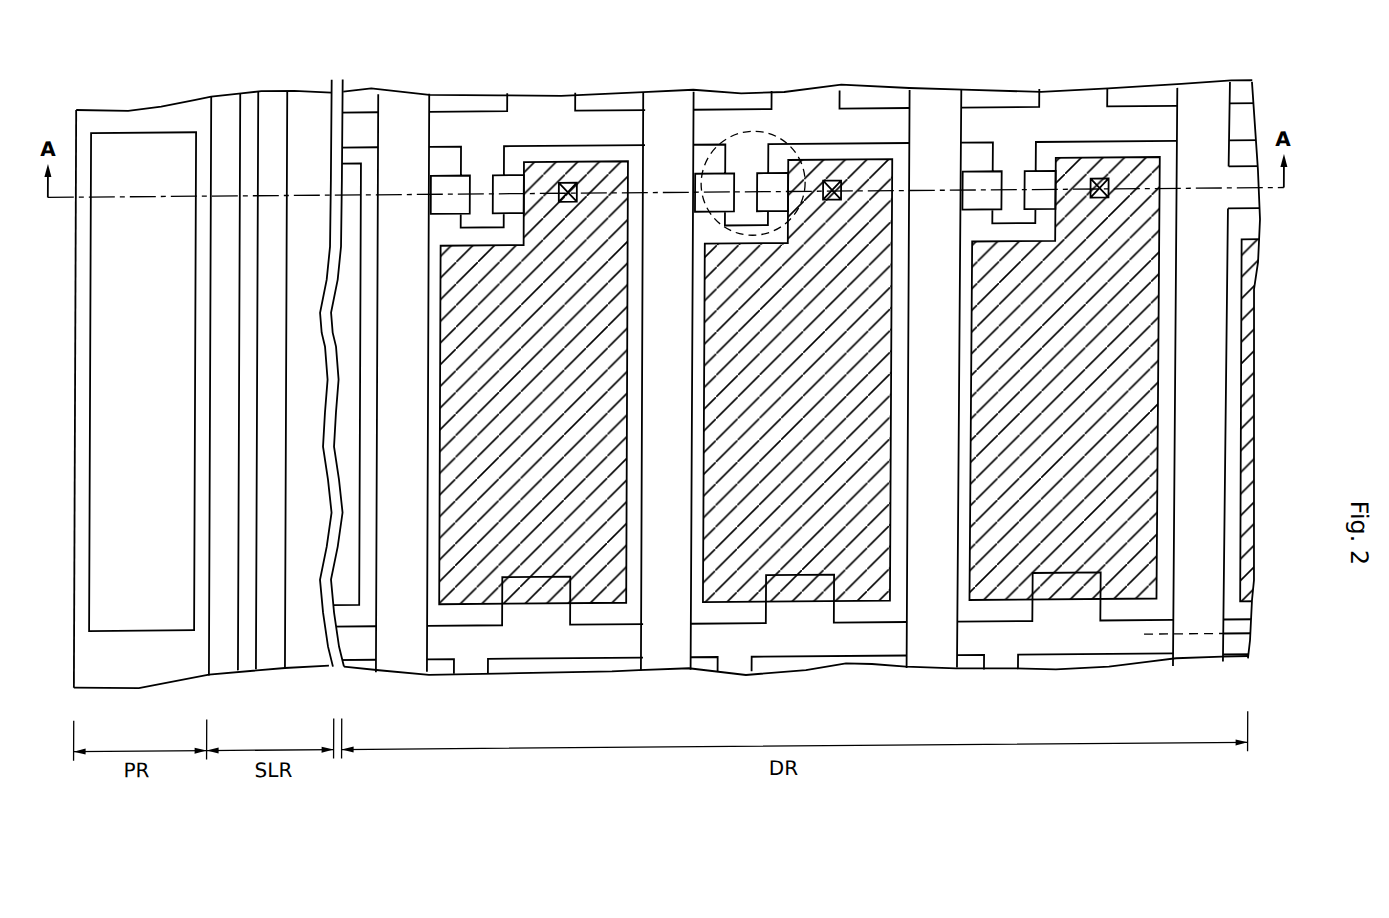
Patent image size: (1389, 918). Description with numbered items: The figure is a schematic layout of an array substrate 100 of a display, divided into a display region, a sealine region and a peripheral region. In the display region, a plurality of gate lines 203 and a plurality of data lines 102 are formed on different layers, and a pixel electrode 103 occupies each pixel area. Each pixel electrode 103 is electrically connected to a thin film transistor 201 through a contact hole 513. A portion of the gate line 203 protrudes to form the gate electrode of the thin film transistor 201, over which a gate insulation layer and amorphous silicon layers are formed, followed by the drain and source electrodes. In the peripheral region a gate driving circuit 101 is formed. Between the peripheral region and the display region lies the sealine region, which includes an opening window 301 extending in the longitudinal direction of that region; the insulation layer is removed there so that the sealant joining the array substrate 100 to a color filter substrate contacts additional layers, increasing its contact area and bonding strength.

The array substrate 100 is at (192, 47).
The gate driving circuit 101 is at (136, 674).
The opening window 301 is at (223, 664).
The data line 102 is at (1206, 95).
The pixel electrode 103 is at (1138, 330).
The thin film transistor 201 is at (772, 136).
The gate line 203 is at (1086, 650).
The contact hole 513 is at (1098, 186).